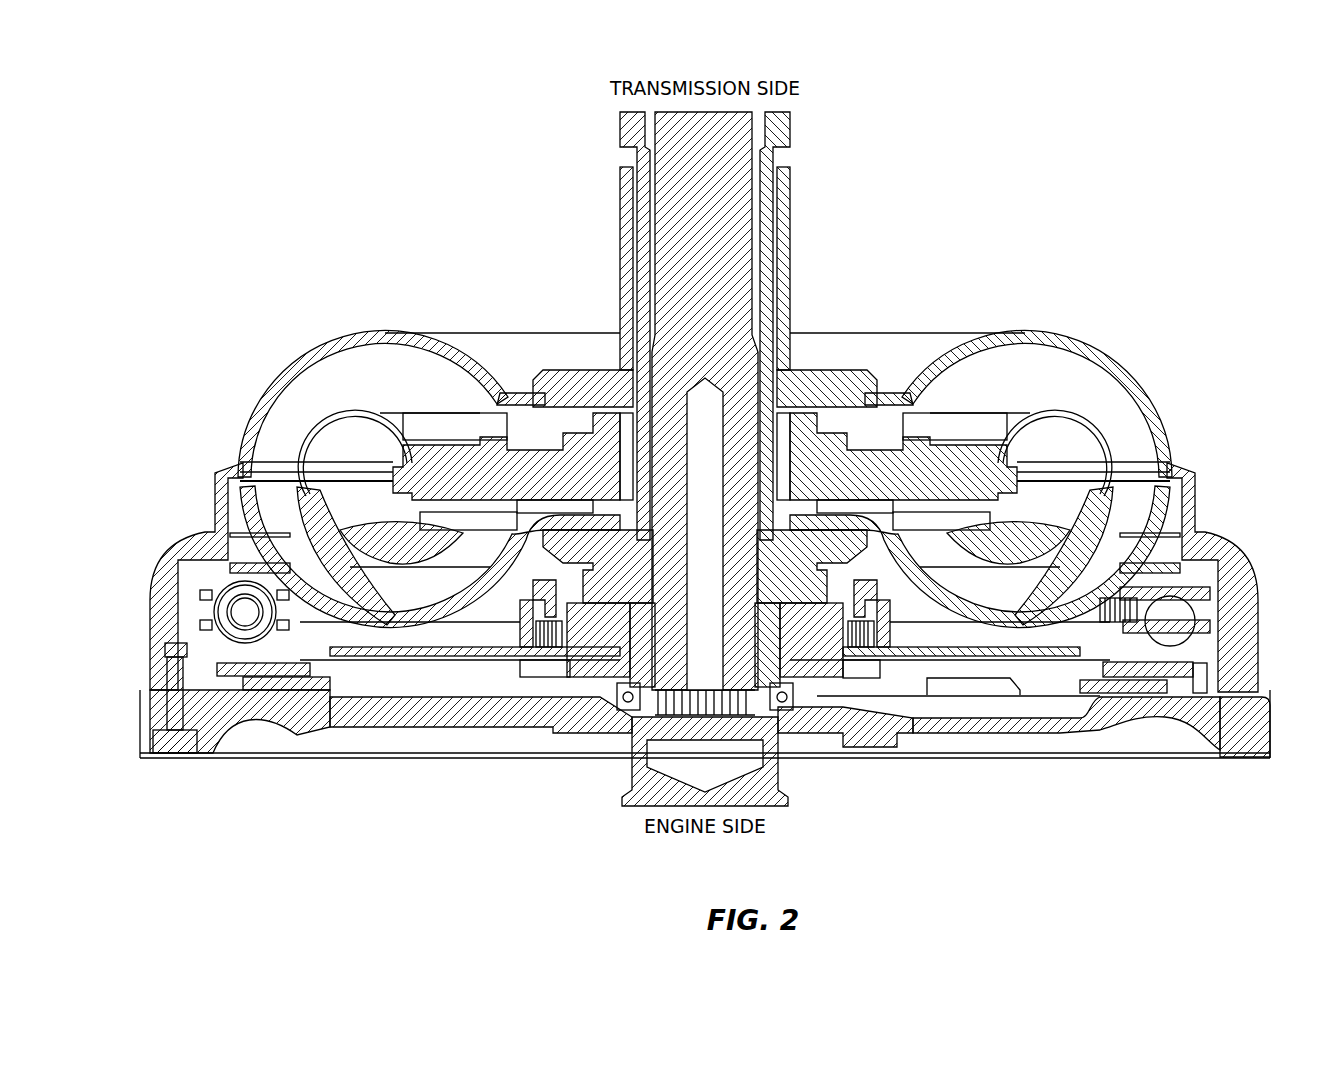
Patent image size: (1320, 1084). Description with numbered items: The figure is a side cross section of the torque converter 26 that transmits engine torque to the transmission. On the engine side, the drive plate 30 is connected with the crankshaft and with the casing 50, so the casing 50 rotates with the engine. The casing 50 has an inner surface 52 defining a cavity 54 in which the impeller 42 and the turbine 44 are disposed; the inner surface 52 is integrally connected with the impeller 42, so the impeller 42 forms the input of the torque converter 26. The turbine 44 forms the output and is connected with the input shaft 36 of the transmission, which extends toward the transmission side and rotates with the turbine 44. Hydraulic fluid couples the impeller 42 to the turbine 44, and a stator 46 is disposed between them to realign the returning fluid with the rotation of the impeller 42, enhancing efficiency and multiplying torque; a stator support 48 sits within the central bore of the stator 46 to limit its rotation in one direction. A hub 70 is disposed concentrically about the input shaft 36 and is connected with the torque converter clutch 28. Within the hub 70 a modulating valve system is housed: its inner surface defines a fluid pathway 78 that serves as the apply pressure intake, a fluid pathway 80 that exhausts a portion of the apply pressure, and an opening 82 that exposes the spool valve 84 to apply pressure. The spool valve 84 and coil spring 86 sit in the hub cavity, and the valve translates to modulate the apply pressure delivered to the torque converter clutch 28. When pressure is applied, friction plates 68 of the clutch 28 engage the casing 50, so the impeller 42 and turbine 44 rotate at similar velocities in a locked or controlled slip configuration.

The torque converter 26 is at (338, 177).
The torque converter clutch 28 is at (290, 648).
The drive plate 30 is at (250, 762).
The input shaft 36 is at (718, 222).
The impeller 42 is at (350, 335).
The turbine 44 is at (387, 623).
The stator 46 is at (877, 468).
The stator support 48 is at (780, 163).
The casing 50 is at (187, 540).
The inner surface 52 is at (193, 589).
The cavity 54 is at (1178, 541).
The friction plates 68 is at (258, 682).
The hub 70 is at (603, 658).
The fluid pathway 78 is at (887, 618).
The fluid pathway 80 is at (836, 640).
The opening 82 is at (888, 597).
The spool valve 84 is at (542, 645).
The coil spring 86 is at (547, 650).